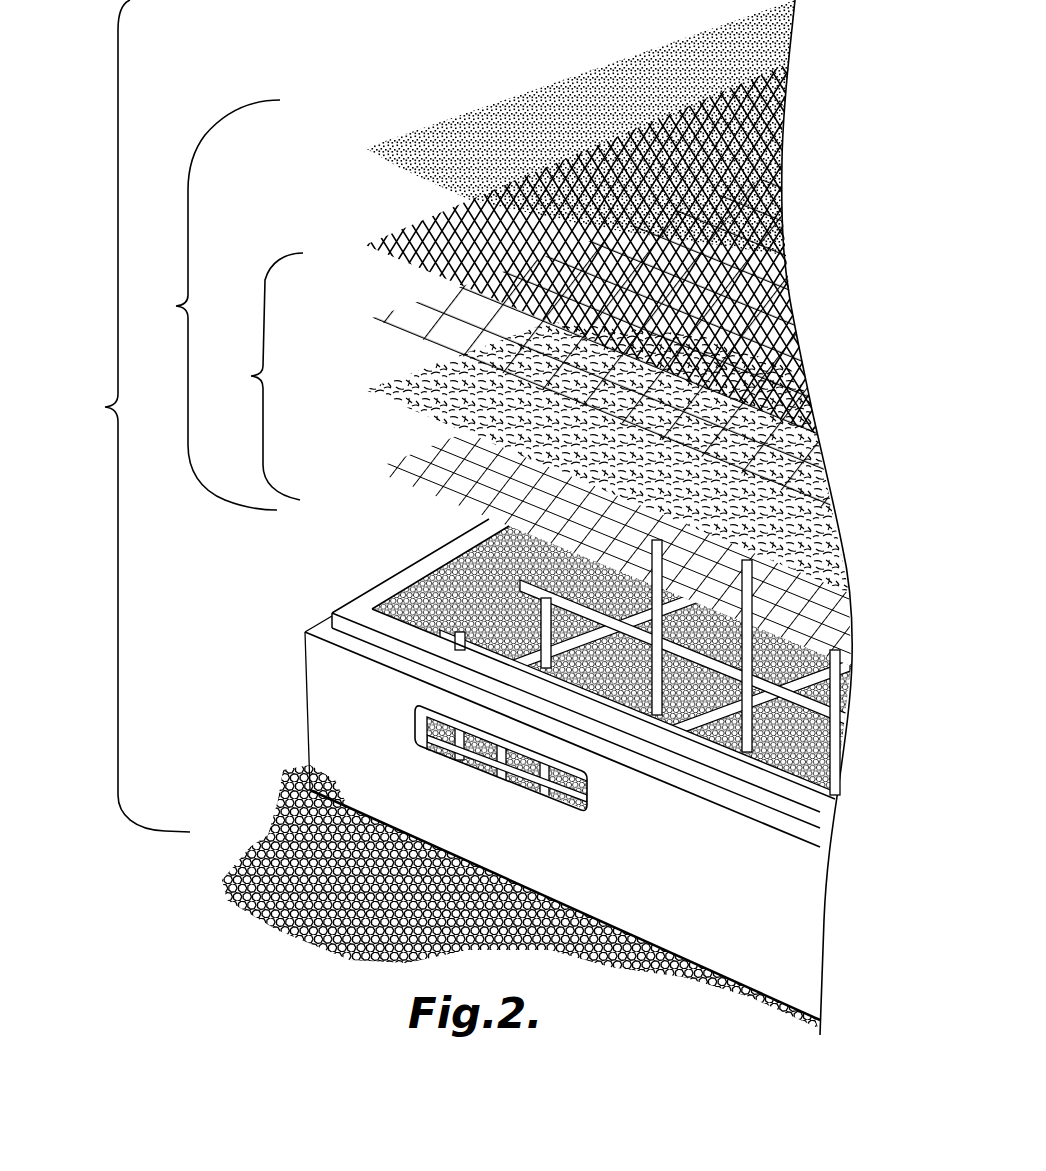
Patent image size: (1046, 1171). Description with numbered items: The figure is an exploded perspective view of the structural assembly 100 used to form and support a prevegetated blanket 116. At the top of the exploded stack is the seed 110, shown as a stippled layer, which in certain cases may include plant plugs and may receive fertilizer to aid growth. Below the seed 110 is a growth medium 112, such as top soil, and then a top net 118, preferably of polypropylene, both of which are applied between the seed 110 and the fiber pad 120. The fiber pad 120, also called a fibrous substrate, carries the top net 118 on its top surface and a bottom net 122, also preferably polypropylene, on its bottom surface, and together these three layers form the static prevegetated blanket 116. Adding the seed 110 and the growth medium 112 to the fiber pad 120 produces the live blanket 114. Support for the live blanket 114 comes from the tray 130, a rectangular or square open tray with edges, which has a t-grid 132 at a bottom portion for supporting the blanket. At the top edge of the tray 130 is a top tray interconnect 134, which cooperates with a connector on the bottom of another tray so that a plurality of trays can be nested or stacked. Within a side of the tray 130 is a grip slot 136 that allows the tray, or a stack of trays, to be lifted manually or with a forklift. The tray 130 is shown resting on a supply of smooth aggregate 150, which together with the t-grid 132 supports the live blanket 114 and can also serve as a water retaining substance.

The structural assembly 100 is at (123, 416).
The seed 110 is at (393, 137).
The growth medium 112 is at (393, 241).
The live blanket 114 is at (204, 305).
The prevegetated blanket 116 is at (250, 376).
The top net 118 is at (392, 314).
The fiber pad 120 is at (378, 386).
The bottom net 122 is at (385, 468).
The tray 130 is at (514, 768).
The t-grid 132 is at (415, 582).
The top tray interconnect 134 is at (333, 624).
The grip slot 136 is at (580, 813).
The smooth aggregate 150 is at (253, 847).